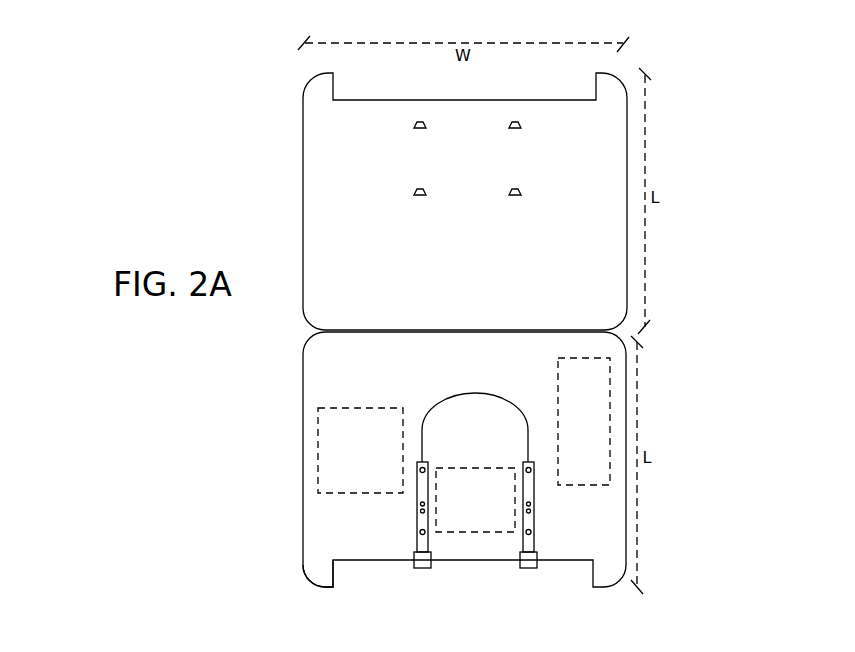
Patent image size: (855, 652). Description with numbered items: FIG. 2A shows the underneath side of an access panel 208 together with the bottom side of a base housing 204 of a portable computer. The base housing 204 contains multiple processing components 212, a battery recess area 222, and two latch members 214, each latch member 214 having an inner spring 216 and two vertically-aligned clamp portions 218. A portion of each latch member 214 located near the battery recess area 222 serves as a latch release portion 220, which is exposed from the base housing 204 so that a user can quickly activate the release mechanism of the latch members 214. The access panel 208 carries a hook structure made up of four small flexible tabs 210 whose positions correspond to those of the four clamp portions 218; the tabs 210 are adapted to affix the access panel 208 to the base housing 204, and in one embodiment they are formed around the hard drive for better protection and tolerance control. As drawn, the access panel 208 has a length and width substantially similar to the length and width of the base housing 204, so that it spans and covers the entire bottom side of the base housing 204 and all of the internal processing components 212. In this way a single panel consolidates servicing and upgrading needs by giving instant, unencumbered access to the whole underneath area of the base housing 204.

The base housing 204 is at (317, 387).
The access panel 208 is at (308, 172).
The flexible tabs 210 is at (521, 124).
The processing components 212 is at (327, 472).
The latch member 214 is at (475, 424).
The inner spring 216 is at (416, 507).
The clamp portions 218 is at (416, 526).
The latch release portion 220 is at (422, 568).
The battery recess area 222 is at (342, 572).